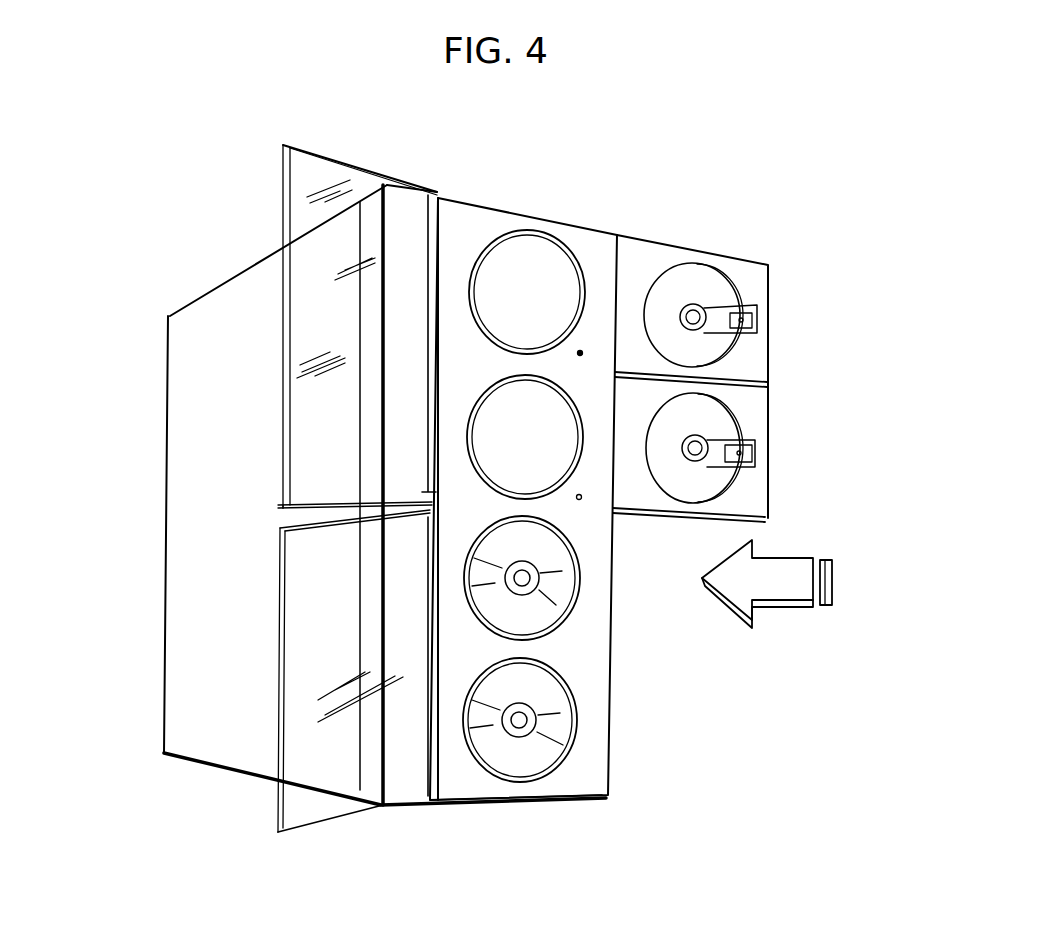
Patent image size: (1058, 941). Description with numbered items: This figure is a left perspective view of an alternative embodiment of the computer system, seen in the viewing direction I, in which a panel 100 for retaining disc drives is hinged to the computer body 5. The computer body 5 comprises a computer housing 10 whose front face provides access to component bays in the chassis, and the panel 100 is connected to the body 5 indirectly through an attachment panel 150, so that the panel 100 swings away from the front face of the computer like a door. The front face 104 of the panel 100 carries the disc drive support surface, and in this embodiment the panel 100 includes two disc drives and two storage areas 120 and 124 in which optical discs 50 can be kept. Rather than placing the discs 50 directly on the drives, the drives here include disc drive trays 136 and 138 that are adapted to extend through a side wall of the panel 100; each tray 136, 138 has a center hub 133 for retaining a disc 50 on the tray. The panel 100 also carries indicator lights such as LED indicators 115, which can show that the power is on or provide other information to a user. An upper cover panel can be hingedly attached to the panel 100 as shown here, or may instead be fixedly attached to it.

The viewing direction I is at (108, 450).
The computer body 5 is at (166, 418).
The computer housing 10 is at (167, 358).
The disc 50 is at (533, 612).
The panel 100 is at (455, 790).
The front face 104 is at (600, 242).
The LED indicators 115 is at (436, 237).
The storage area 120 is at (465, 580).
The storage area 124 is at (465, 722).
The center hub 133 is at (692, 305).
The disc drive tray 136 is at (707, 293).
The disc drive tray 138 is at (713, 427).
The attachment panel 150 is at (432, 504).